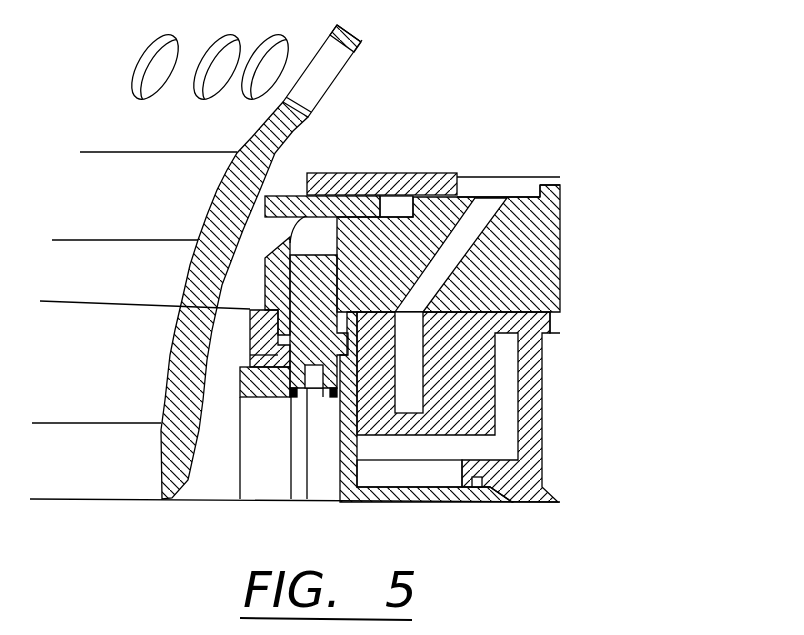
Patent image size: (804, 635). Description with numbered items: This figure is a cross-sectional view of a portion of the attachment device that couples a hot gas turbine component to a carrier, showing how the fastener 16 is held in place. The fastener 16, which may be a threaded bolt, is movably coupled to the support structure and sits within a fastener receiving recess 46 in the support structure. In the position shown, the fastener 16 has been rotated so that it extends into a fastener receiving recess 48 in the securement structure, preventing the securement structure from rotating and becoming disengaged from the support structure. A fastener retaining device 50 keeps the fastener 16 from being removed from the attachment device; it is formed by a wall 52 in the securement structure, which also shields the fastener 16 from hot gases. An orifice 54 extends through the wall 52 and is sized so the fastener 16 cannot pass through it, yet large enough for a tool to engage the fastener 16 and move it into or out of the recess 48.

The fastener receiving recess 46 is at (290, 243).
The fastener 16 is at (278, 323).
The fastener retaining device 50 is at (250, 355).
The wall 52 is at (270, 383).
The fastener receiving recess 48 is at (291, 420).
The orifice 54 is at (333, 397).